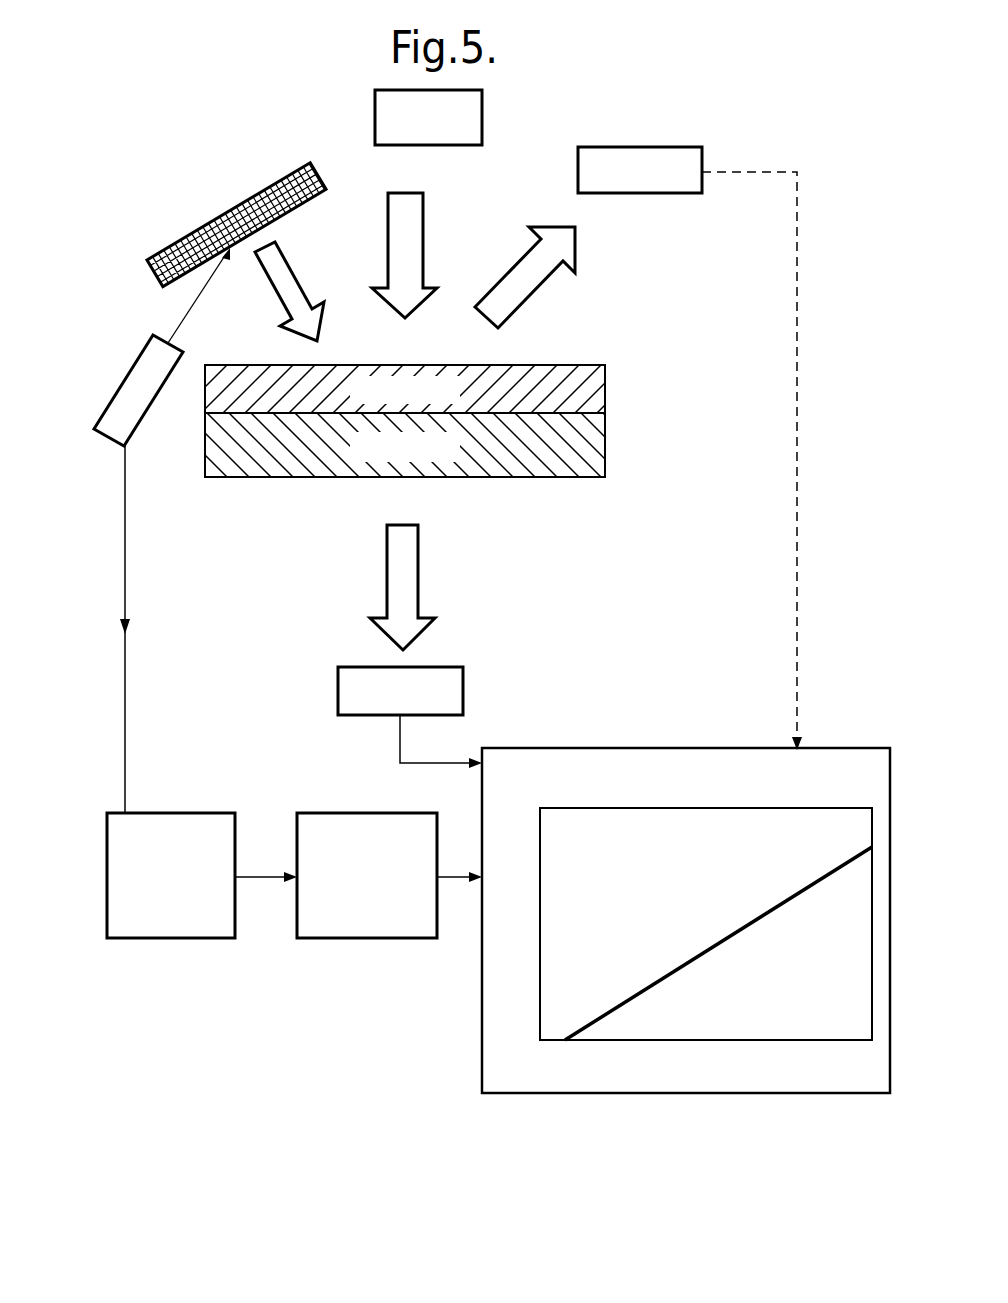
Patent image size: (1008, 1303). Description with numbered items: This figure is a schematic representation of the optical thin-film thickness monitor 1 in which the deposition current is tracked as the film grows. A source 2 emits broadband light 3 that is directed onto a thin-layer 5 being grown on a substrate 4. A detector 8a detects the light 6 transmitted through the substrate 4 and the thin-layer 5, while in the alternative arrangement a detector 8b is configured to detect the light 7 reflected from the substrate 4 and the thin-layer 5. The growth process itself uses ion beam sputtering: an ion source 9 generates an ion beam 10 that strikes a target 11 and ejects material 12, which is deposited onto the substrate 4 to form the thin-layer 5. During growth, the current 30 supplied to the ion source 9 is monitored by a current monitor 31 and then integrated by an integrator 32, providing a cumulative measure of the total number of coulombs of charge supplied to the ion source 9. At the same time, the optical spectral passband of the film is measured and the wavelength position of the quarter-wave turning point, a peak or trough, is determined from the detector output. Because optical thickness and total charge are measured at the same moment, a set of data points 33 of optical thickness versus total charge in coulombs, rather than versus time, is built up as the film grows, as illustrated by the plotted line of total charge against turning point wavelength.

The optical thin-film thickness monitor 1 is at (166, 119).
The source 2 is at (470, 98).
The broadband light 3 is at (412, 232).
The substrate 4 is at (605, 446).
The thin-layer 5 is at (556, 380).
The transmitted light 6 is at (393, 586).
The reflected light 7 is at (546, 272).
The detector 8a is at (446, 669).
The detector 8b is at (683, 186).
The ion source 9 is at (118, 416).
The ion beam 10 is at (187, 310).
The target 11 is at (196, 229).
The material 12 is at (283, 290).
The current 30 is at (123, 628).
The current monitor 31 is at (120, 908).
The integrator 32 is at (350, 925).
The data points 33 is at (619, 1070).